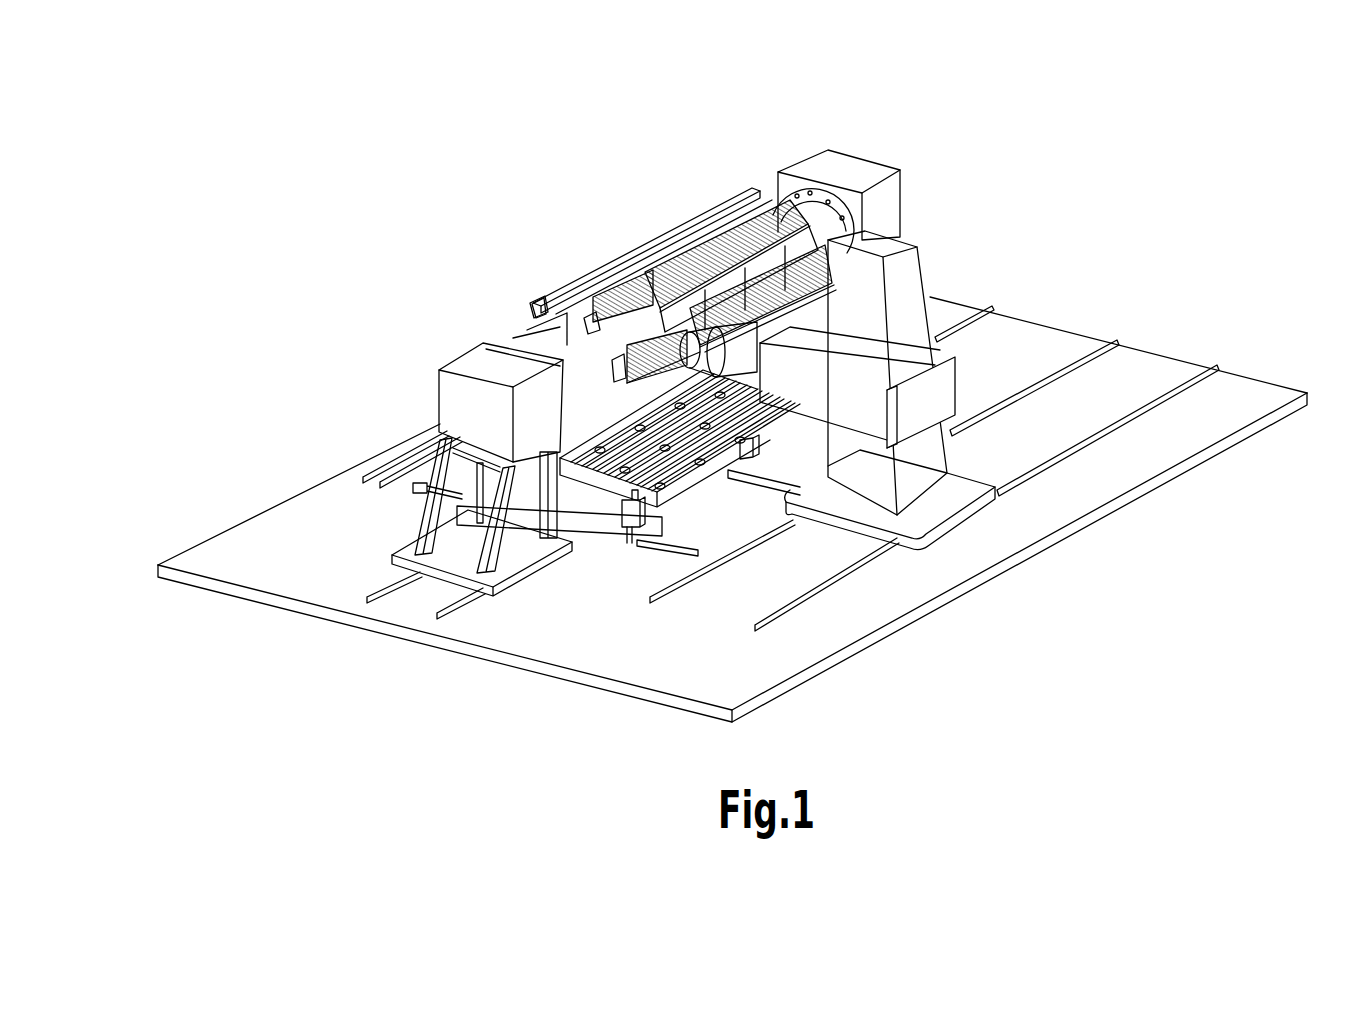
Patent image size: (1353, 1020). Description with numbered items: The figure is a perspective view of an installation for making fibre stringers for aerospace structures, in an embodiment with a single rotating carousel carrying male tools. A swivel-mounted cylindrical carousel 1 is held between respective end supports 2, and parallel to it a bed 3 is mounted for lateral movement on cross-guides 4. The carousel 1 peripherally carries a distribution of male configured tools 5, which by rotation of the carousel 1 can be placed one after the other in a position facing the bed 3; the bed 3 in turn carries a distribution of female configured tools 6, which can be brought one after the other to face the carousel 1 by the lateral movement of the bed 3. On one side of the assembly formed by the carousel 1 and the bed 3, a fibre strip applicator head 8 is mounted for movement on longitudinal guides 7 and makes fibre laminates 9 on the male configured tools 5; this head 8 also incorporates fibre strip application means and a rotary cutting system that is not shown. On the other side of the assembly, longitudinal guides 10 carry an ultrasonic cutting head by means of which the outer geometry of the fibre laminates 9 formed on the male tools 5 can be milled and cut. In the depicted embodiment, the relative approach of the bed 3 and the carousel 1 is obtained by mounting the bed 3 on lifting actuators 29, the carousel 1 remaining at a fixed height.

The carousel 1 is at (647, 238).
The end supports 2 is at (470, 408).
The bed 3 is at (622, 463).
The cross-guides 4 is at (417, 487).
The male configured tools 5 is at (613, 370).
The female configured tools 6 is at (713, 425).
The longitudinal guides 7 is at (1083, 442).
The fibre strip applicator head 8 is at (693, 345).
The fibre laminates 9 is at (803, 285).
The longitudinal guides 10 is at (395, 460).
The lifting actuators 29 is at (633, 500).